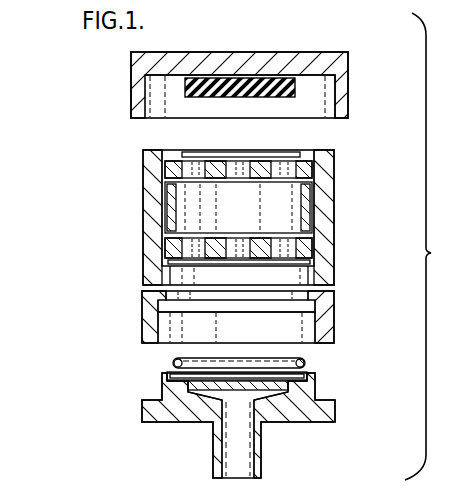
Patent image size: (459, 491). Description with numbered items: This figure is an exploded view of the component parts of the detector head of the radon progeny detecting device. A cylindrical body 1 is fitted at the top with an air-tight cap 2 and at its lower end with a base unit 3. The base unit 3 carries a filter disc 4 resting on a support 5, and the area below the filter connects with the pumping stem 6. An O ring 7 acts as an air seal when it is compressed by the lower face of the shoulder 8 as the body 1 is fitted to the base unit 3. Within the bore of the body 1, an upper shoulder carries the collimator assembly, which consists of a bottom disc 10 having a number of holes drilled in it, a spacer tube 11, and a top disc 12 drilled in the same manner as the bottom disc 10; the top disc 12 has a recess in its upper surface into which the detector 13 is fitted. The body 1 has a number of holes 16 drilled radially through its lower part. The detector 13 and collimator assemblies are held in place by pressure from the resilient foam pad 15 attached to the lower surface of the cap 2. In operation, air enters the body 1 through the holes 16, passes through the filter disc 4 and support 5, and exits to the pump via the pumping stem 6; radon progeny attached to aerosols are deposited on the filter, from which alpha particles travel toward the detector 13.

The cylindrical body 1 is at (125, 213).
The air-tight cap 2 is at (131, 80).
The base unit 3 is at (272, 425).
The filter disc 4 is at (178, 372).
The support 5 is at (215, 391).
The pumping stem 6 is at (233, 459).
The O ring 7 is at (295, 358).
The shoulder 8 is at (300, 322).
The bottom disc 10 is at (165, 248).
The spacer tube 11 is at (312, 200).
The top disc 12 is at (310, 168).
The detector 13 is at (210, 152).
The resilient foam pad 15 is at (230, 97).
The holes 16 is at (140, 290).